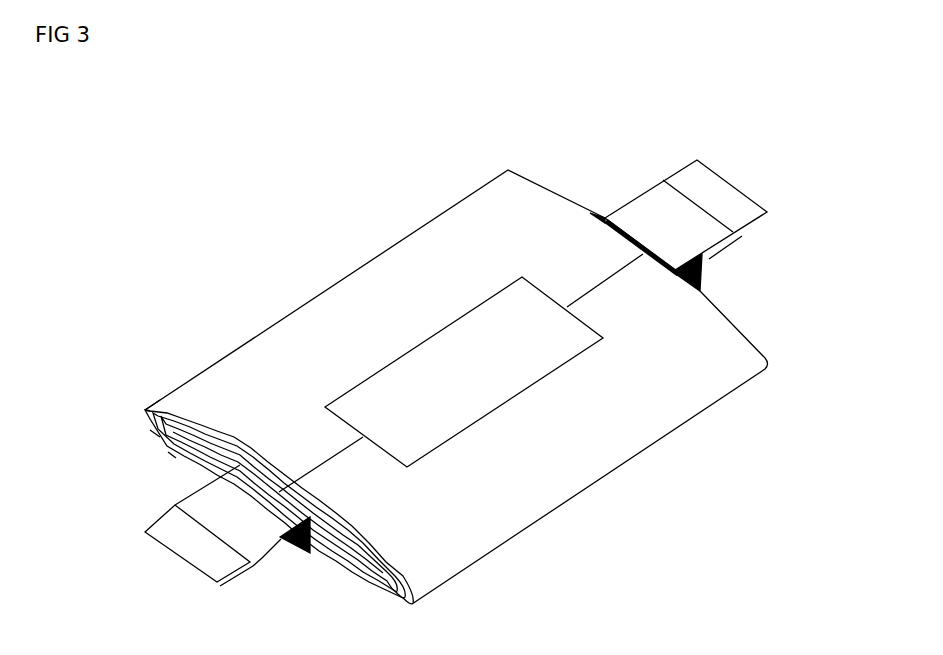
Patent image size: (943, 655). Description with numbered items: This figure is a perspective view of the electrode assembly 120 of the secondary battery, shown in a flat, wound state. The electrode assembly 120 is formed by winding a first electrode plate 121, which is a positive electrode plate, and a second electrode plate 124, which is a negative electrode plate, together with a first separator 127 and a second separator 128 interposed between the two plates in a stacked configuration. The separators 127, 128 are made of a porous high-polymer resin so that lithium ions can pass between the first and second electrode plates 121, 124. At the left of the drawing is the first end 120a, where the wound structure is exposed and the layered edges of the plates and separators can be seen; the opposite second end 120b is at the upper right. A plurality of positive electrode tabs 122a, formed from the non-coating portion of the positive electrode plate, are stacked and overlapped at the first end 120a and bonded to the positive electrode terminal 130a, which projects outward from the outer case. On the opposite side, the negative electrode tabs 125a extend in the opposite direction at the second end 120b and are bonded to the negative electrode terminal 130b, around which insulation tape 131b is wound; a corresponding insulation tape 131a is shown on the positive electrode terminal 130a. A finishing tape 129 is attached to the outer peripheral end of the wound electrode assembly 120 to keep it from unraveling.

The electrode assembly 120 is at (193, 295).
The first end 120a is at (351, 574).
The second end 120b is at (574, 196).
The first electrode plate 121 is at (147, 417).
The positive electrode tab 122a is at (306, 552).
The second electrode plate 124 is at (167, 452).
The negative electrode tab 125a is at (703, 284).
The first separator 127 is at (146, 410).
The second separator 128 is at (147, 435).
The finishing tape 129 is at (503, 301).
The positive electrode terminal 130a is at (193, 556).
The negative electrode terminal 130b is at (690, 172).
The first insulating tape 131a is at (262, 562).
The insulation tape 131b is at (657, 190).